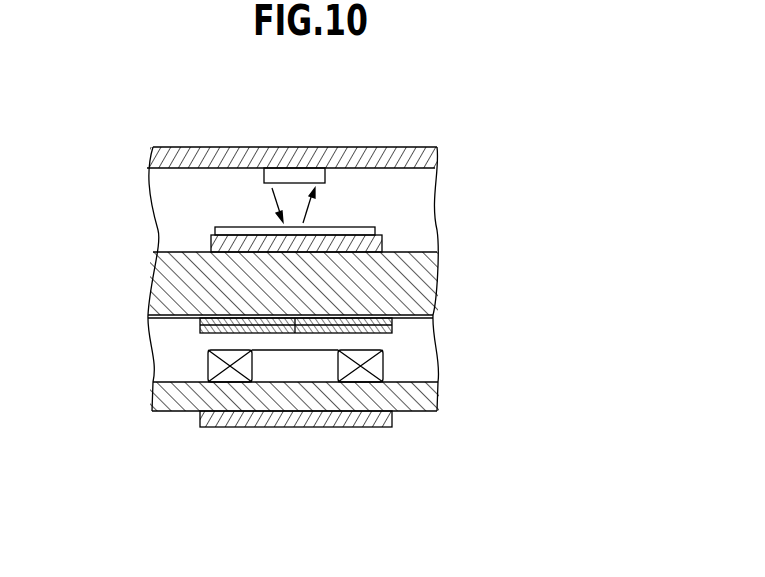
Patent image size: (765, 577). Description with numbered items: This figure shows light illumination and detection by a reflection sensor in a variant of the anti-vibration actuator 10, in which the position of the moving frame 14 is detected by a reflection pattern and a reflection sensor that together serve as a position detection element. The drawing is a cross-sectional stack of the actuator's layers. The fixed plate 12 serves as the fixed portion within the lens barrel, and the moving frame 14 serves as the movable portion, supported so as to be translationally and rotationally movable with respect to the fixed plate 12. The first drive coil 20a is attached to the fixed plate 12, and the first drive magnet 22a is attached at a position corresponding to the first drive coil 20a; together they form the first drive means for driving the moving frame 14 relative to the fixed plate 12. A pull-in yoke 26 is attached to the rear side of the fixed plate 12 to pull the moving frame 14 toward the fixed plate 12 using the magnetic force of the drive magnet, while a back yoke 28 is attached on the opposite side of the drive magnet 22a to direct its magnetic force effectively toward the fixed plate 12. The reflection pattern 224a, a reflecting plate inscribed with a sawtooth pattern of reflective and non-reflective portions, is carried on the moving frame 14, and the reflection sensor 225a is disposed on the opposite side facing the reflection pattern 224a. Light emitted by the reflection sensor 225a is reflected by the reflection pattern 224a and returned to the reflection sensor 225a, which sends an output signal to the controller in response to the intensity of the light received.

The anti-vibration actuator 10 is at (473, 150).
The fixed plate 12 is at (418, 412).
The moving frame 14 is at (165, 282).
The first drive coil 20a is at (384, 369).
The first drive magnet 22a is at (200, 330).
The pull-in yoke 26 is at (325, 428).
The back yoke 28 is at (384, 244).
The reflection pattern 224a is at (214, 231).
The reflection sensor 225a is at (285, 178).